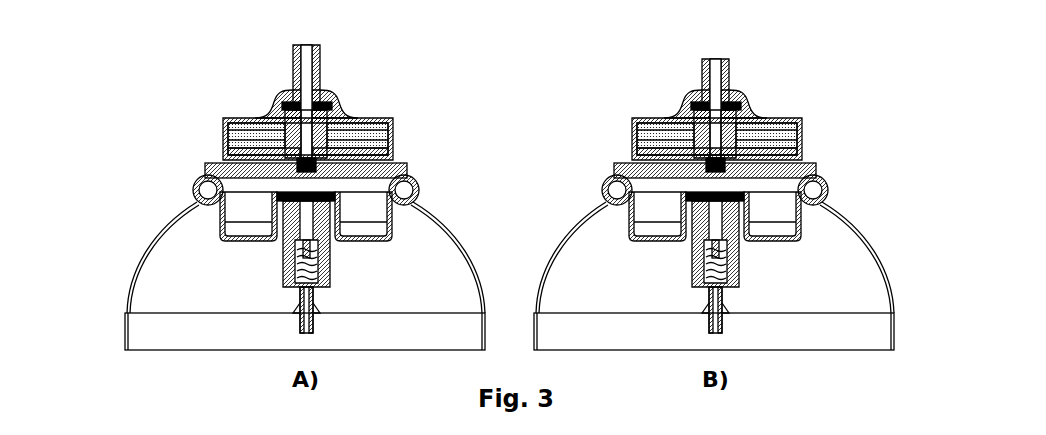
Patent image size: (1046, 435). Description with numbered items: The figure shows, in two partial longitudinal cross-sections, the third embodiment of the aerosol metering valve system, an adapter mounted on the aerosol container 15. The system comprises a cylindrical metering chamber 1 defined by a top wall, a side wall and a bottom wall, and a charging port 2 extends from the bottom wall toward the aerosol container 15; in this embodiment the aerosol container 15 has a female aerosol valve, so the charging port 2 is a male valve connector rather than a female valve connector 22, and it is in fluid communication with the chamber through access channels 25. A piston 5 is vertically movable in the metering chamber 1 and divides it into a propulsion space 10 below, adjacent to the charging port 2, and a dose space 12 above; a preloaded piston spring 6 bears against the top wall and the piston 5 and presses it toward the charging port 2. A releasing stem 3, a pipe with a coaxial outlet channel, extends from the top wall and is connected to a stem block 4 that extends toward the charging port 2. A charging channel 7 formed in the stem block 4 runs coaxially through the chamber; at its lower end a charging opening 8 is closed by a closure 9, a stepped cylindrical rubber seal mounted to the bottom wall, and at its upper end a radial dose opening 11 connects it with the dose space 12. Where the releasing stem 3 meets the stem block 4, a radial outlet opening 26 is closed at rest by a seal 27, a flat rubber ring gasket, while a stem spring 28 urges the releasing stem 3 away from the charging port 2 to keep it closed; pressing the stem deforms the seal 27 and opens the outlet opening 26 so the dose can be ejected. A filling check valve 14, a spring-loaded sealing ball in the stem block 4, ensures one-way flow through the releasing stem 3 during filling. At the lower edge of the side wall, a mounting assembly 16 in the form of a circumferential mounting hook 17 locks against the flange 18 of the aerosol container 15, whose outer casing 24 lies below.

The metering chamber 1 is at (388, 146).
The charging port 2 is at (320, 197).
The releasing stem 3 is at (724, 75).
The stem block 4 is at (328, 127).
The piston 5 is at (377, 153).
The piston spring 6 is at (678, 130).
The charging channel 7 is at (708, 143).
The charging opening 8 is at (308, 153).
The closure 9 is at (707, 168).
The propulsion space 10 is at (783, 150).
The dose opening 11 is at (318, 118).
The dose space 12 is at (233, 130).
The filling check valve 14 is at (310, 118).
The aerosol container 15 is at (125, 333).
The mounting assembly 16 is at (835, 192).
The mounting hook 17 is at (198, 198).
The flange 18 is at (210, 190).
The female valve connector 22 is at (315, 208).
The outer casing 24 is at (892, 330).
The access channels 25 is at (288, 172).
The outlet opening 26 is at (725, 118).
The seal 27 is at (740, 105).
The stem spring 28 is at (295, 158).